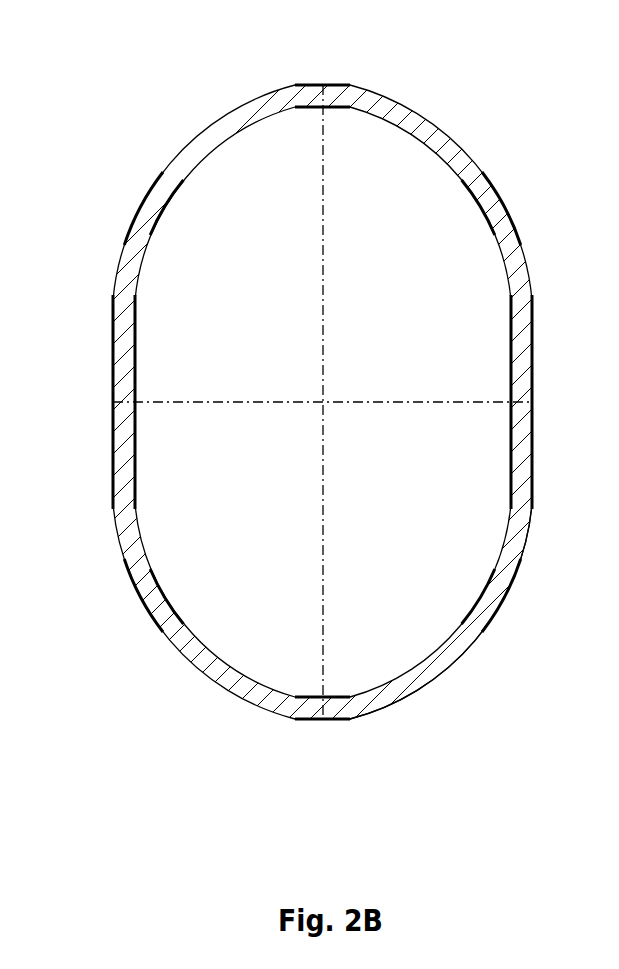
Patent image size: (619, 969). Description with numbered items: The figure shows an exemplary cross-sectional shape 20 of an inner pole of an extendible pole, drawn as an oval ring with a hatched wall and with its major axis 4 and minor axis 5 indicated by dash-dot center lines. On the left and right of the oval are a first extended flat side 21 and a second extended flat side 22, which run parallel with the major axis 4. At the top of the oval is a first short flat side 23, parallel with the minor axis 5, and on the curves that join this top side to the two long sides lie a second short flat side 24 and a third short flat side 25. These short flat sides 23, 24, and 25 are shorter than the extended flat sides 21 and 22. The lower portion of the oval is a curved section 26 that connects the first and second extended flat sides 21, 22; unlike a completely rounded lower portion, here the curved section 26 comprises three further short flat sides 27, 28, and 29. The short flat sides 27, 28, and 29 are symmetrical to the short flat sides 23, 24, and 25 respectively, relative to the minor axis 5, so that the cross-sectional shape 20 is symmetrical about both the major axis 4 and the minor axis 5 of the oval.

The cross-sectional shape 20 is at (153, 140).
The major axis 4 is at (325, 275).
The minor axis 5 is at (422, 402).
The first extended flat side 21 is at (122, 375).
The second extended flat side 22 is at (522, 373).
The first short flat side 23 is at (313, 93).
The second short flat side 24 is at (153, 206).
The third short flat side 25 is at (496, 208).
The curved section 26 is at (433, 682).
The short flat side 27 is at (345, 717).
The short flat side 28 is at (155, 602).
The short flat side 29 is at (497, 598).